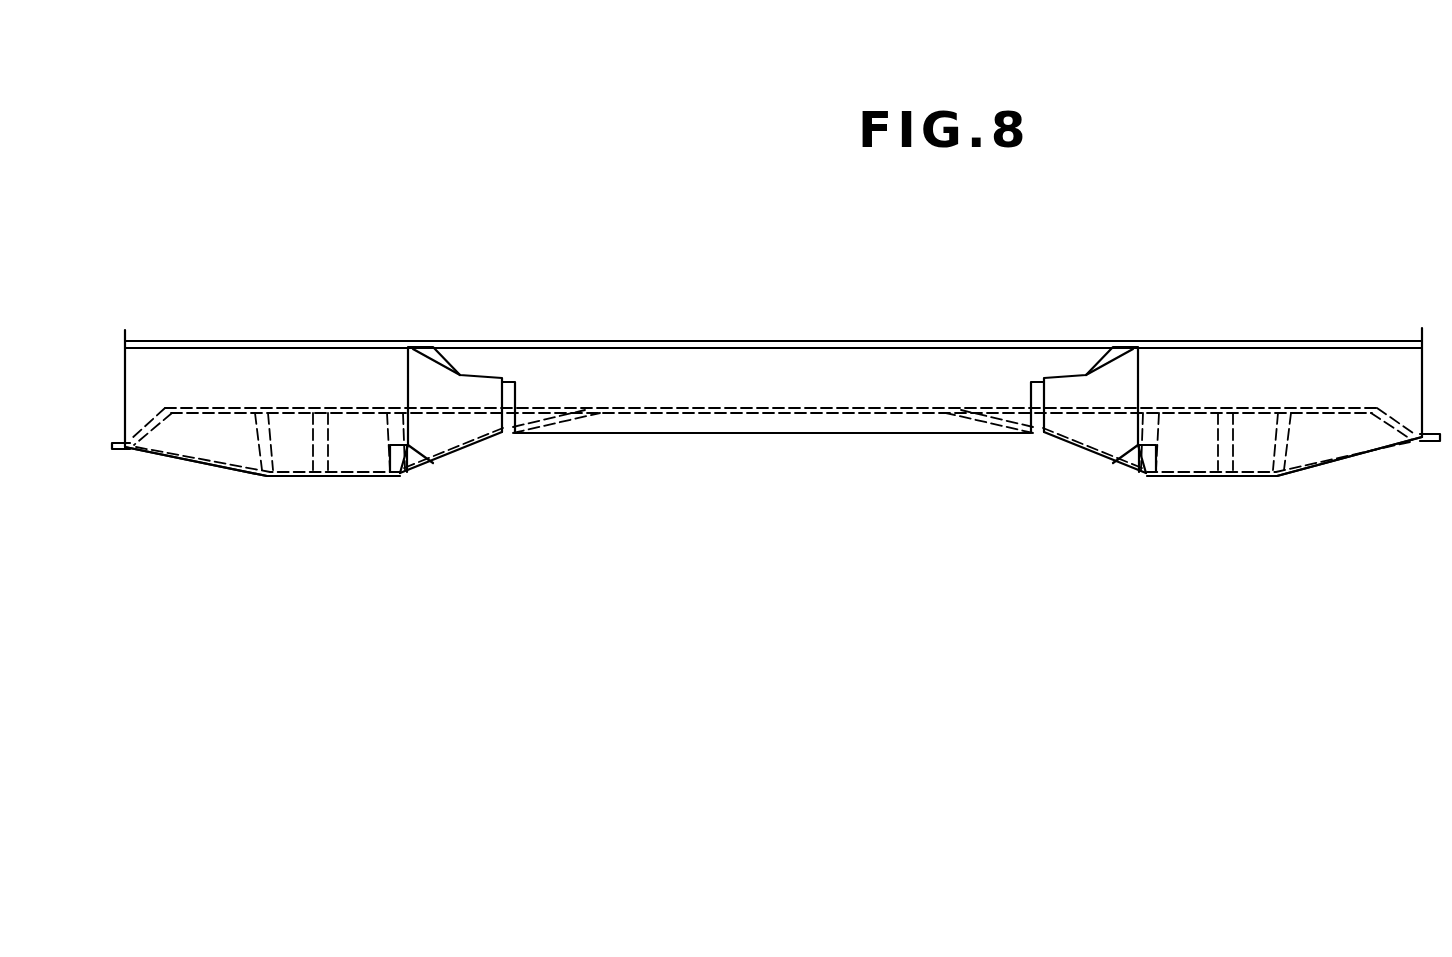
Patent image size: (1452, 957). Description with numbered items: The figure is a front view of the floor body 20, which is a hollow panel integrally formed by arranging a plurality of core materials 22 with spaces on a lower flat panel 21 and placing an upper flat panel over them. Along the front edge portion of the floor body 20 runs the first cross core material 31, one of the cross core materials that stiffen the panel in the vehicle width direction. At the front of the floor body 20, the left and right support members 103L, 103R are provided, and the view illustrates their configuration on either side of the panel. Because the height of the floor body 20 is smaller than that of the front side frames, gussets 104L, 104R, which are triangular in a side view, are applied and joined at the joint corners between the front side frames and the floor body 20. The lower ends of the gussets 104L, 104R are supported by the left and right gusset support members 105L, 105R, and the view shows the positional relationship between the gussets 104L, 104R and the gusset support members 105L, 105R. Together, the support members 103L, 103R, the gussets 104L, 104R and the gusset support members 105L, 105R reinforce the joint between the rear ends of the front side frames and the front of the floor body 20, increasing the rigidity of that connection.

The floor body 20 is at (237, 157).
The lower flat panel 21 is at (830, 407).
The core materials 22 is at (835, 348).
The first cross core material 31 is at (702, 357).
The right support member 103R is at (470, 433).
The left support member 103L is at (1088, 433).
The right gusset 104R is at (387, 438).
The left gusset 104L is at (1277, 443).
The right gusset support member 105R is at (185, 453).
The left gusset support member 105L is at (1325, 453).